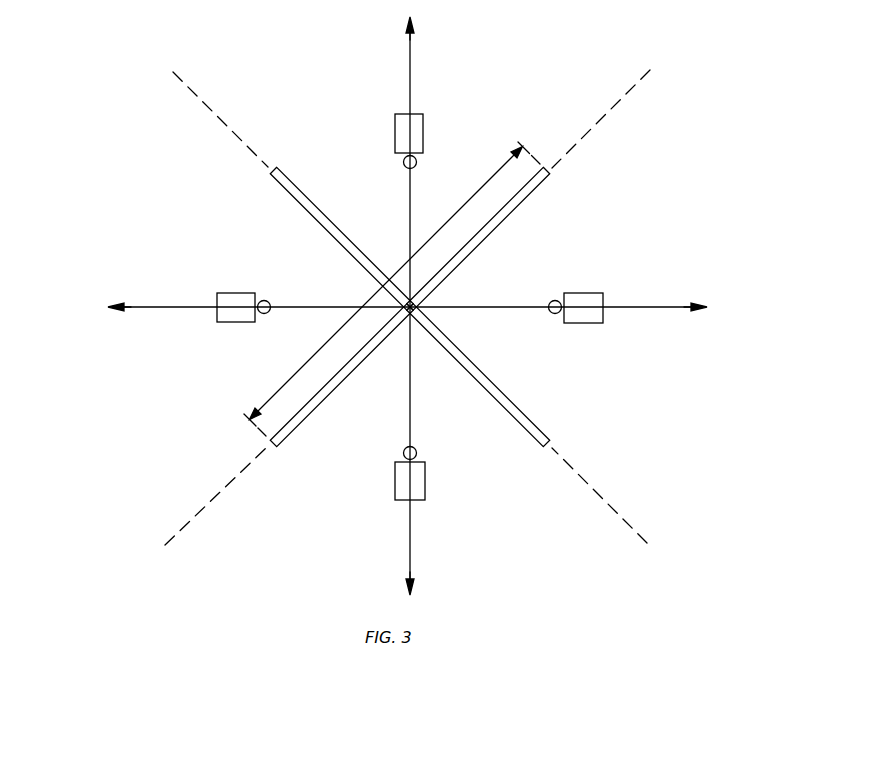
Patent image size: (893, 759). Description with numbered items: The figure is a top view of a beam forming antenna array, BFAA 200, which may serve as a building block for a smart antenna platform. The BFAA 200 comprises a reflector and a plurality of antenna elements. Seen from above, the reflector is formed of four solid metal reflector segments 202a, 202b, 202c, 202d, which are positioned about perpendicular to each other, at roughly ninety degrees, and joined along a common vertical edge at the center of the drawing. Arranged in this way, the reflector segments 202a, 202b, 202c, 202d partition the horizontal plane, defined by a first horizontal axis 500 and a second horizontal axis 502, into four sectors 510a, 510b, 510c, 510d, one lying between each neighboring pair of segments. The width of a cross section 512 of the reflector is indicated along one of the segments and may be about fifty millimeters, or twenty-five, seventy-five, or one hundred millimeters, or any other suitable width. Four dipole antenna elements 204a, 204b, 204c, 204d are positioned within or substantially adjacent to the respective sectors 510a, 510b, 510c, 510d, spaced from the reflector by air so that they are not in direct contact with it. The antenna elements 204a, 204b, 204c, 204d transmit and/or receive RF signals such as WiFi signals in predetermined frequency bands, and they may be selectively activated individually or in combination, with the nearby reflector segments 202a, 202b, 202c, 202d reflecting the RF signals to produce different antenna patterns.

The BFAA 200 is at (193, 160).
The reflector segment 202a is at (550, 173).
The reflector segment 202b is at (548, 441).
The reflector segment 202c is at (277, 443).
The reflector segment 202d is at (276, 184).
The antenna element 204a is at (424, 131).
The antenna element 204b is at (230, 318).
The antenna element 204c is at (425, 481).
The antenna element 204d is at (585, 318).
The first horizontal axis 500 is at (411, 553).
The second horizontal axis 502 is at (645, 307).
The sector 510a is at (498, 40).
The sector 510b is at (112, 276).
The sector 510c is at (352, 590).
The sector 510d is at (760, 266).
The cross section 512 is at (492, 177).